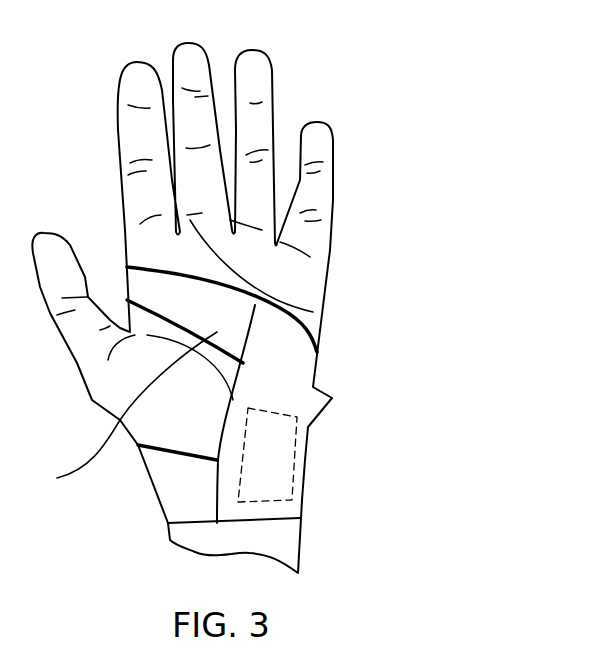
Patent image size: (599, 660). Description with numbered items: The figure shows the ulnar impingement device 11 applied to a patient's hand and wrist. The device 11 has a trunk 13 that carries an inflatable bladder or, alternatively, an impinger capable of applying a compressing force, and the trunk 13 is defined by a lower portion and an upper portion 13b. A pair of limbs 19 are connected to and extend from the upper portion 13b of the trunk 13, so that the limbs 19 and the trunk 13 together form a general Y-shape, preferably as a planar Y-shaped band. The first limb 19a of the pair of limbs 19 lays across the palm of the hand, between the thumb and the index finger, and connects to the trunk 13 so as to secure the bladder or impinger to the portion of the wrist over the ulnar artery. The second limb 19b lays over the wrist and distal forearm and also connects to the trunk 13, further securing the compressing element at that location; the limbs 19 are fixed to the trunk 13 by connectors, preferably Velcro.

The device 11 is at (373, 415).
The trunk 13 is at (287, 382).
The upper portion of trunk 13b is at (225, 457).
The pair of limbs 19 is at (160, 478).
The first limb 19a is at (130, 280).
The second limb 19b is at (180, 502).